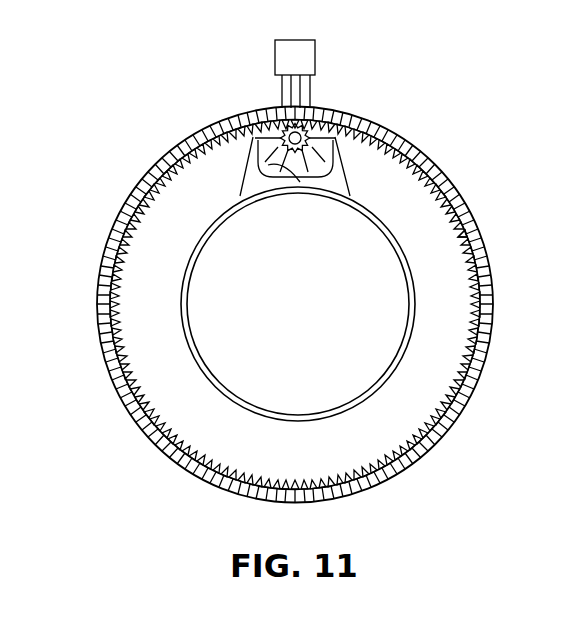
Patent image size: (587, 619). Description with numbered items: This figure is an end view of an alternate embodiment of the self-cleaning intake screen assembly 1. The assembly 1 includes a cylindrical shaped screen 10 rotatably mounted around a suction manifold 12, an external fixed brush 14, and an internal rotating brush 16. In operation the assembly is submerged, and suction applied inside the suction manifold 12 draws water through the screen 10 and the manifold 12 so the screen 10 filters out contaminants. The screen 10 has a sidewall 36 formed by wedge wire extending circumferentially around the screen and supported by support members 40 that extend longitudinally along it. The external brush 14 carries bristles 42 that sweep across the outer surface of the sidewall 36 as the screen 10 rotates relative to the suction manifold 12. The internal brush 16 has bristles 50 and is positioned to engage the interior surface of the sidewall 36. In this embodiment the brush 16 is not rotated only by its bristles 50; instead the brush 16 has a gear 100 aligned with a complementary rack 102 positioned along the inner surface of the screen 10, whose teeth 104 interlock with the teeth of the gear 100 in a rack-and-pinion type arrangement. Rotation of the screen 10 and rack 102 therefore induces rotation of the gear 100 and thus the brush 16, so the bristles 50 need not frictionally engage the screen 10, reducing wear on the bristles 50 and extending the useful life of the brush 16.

The self-cleaning intake screen assembly 1 is at (480, 125).
The cylindrical shaped screen 10 is at (98, 249).
The suction manifold 12 is at (382, 233).
The external fixed brush 14 is at (316, 56).
The internal rotating brush 16 is at (262, 120).
The sidewall 36 is at (470, 203).
The support members 40 is at (488, 238).
The bristles 42 is at (311, 92).
The bristles 50 is at (250, 171).
The gear 100 is at (294, 152).
The rack 102 is at (427, 180).
The teeth 104 is at (458, 233).